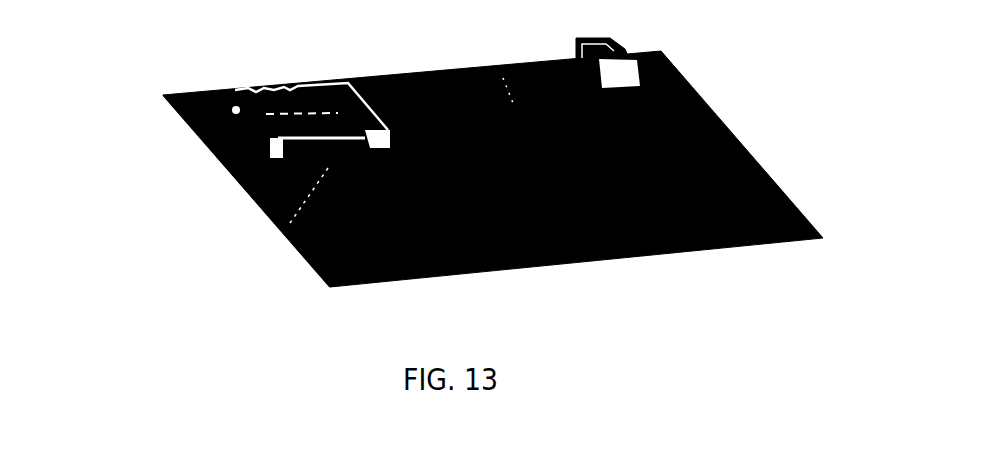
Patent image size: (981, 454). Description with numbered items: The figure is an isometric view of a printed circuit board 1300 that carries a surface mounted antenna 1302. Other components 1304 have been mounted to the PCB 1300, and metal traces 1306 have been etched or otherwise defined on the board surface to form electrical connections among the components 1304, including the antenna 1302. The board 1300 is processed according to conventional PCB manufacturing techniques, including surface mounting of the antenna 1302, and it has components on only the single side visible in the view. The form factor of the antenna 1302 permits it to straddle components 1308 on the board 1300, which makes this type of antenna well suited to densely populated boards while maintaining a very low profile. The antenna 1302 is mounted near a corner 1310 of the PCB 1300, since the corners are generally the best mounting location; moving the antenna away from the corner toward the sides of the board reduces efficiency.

The printed circuit board 1300 is at (852, 302).
The surface mounted antenna 1302 is at (233, 80).
The components 1304 is at (613, 35).
The metal traces 1306 is at (493, 62).
The components 1308 is at (277, 223).
The corner 1310 is at (168, 102).